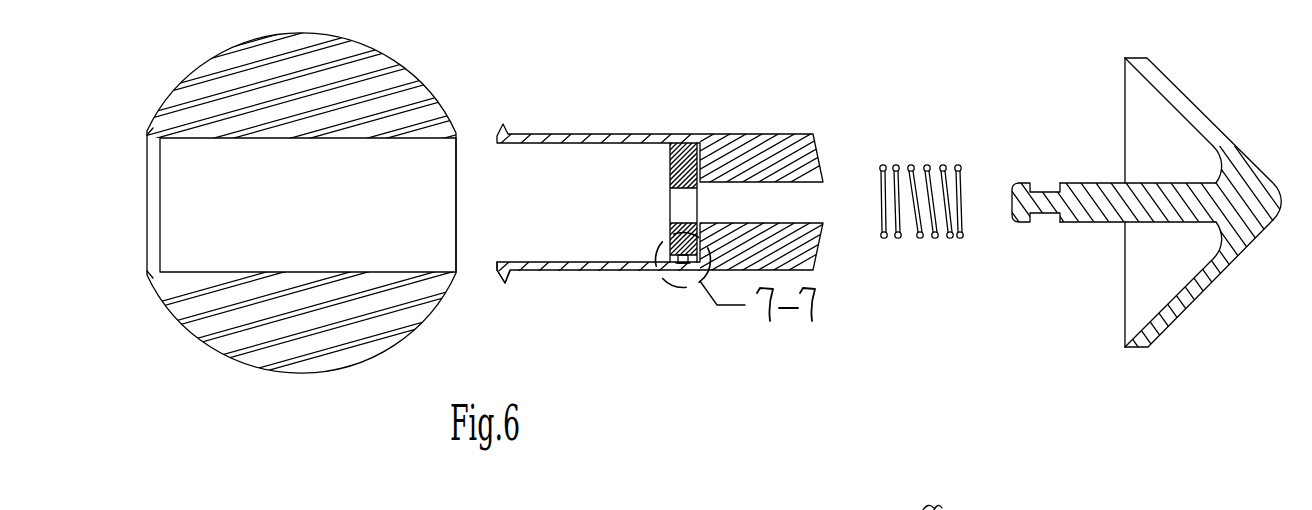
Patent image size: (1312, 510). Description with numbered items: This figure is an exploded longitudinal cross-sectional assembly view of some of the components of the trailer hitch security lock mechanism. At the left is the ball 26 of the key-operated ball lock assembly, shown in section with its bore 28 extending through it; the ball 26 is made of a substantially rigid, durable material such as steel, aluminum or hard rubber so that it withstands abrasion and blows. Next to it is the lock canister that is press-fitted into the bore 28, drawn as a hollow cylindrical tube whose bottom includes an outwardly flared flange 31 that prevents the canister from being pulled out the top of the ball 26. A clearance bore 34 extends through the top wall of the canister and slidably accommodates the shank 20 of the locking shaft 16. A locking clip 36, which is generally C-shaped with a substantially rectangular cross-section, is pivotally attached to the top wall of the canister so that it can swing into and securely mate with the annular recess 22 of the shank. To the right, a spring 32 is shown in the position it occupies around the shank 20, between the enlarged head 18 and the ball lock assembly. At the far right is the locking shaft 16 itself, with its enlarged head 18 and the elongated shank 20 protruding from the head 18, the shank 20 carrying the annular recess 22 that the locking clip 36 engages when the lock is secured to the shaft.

The locking shaft 16 is at (1207, 102).
The enlarged head 18 is at (1229, 267).
The elongated shank 20 is at (1103, 182).
The annular recess 22 is at (1053, 214).
The ball 26 is at (392, 58).
The bore 28 is at (187, 273).
The outwardly flared flange 31 is at (503, 283).
The spring 32 is at (927, 165).
The clearance bore 34 is at (811, 210).
The locking clip 36 is at (688, 145).